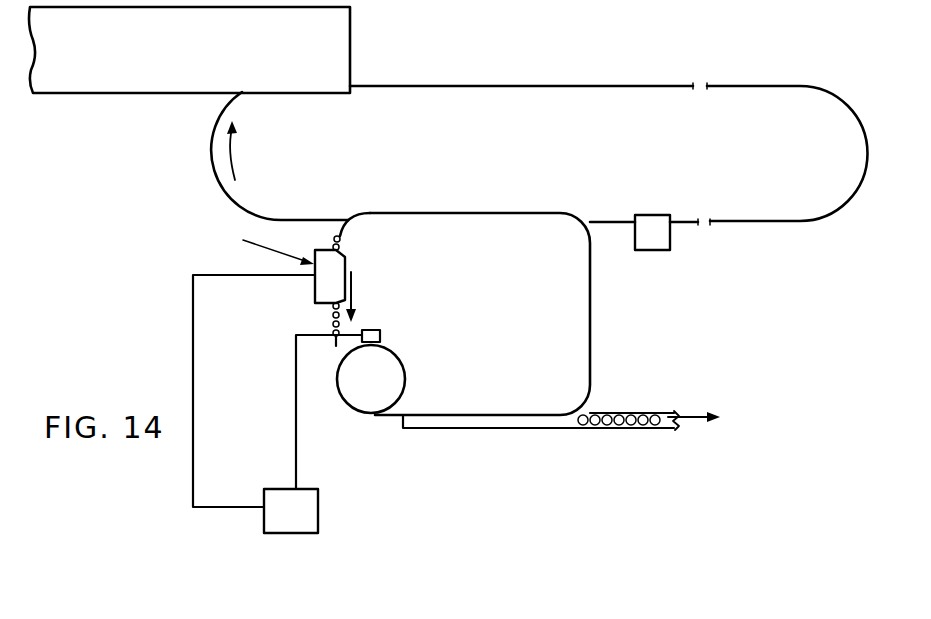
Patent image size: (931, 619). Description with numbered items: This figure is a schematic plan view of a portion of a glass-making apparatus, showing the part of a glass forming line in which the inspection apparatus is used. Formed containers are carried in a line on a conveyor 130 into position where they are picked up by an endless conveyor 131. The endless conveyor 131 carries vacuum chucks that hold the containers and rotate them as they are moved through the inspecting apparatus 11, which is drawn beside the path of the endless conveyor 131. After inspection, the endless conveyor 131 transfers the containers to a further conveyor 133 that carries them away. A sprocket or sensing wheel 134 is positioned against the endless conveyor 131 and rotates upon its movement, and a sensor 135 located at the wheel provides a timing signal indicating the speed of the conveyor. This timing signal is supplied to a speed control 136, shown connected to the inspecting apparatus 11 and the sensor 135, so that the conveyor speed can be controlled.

The inspecting apparatus 11 is at (318, 287).
The conveyor 130 is at (445, 85).
The endless conveyor 131 is at (466, 215).
The conveyor 133 is at (605, 428).
The sprocket or sensing wheel 134 is at (392, 360).
The sensor 135 is at (373, 330).
The speed control 136 is at (278, 503).